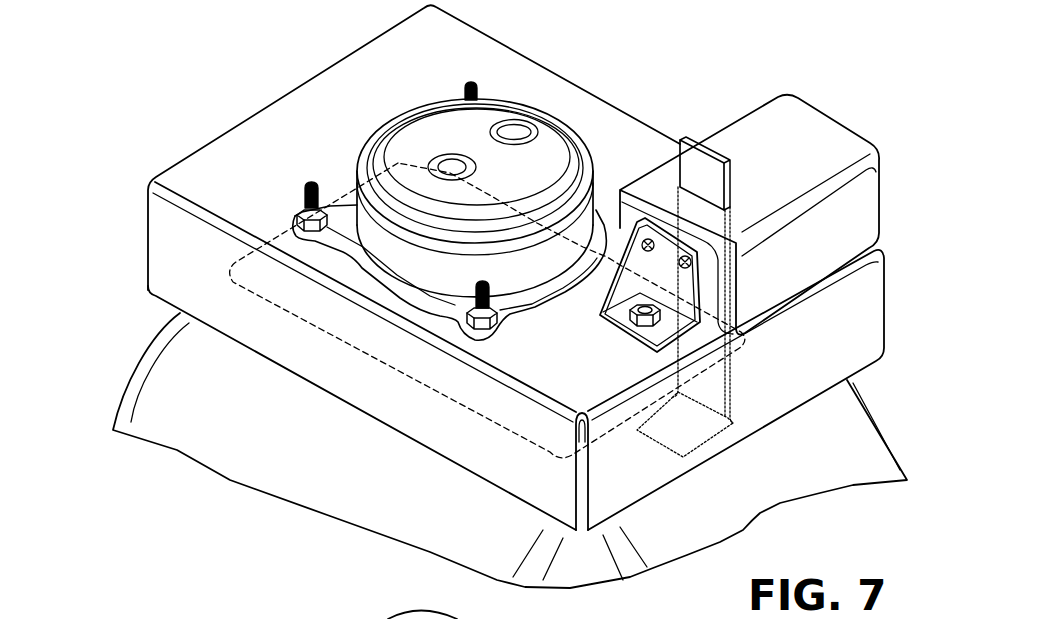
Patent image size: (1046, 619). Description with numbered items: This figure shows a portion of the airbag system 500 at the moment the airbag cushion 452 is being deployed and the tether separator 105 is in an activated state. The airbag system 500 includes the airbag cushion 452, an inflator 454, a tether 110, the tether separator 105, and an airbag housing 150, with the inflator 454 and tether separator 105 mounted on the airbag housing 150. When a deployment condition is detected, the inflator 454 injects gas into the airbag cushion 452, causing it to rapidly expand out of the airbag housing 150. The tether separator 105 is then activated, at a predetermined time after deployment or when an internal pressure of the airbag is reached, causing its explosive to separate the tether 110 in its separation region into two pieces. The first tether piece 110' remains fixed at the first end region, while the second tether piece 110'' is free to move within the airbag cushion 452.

The airbag system 500 is at (272, 58).
The airbag housing 150 is at (172, 172).
The inflator 454 is at (492, 110).
The tether 110 is at (724, 209).
The first tether piece 110' is at (750, 280).
The second tether piece 110'' is at (743, 463).
The tether separator 105 is at (846, 272).
The airbag cushion 452 is at (252, 458).